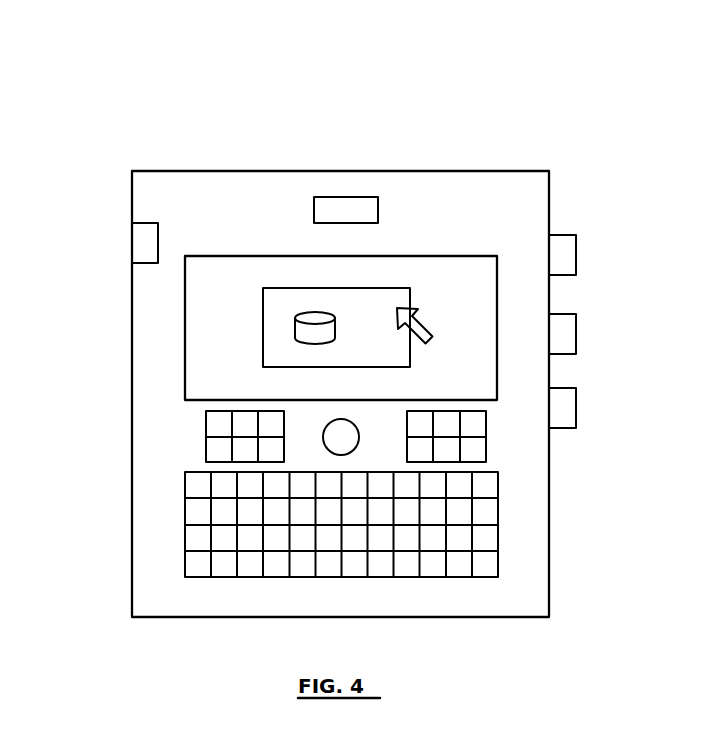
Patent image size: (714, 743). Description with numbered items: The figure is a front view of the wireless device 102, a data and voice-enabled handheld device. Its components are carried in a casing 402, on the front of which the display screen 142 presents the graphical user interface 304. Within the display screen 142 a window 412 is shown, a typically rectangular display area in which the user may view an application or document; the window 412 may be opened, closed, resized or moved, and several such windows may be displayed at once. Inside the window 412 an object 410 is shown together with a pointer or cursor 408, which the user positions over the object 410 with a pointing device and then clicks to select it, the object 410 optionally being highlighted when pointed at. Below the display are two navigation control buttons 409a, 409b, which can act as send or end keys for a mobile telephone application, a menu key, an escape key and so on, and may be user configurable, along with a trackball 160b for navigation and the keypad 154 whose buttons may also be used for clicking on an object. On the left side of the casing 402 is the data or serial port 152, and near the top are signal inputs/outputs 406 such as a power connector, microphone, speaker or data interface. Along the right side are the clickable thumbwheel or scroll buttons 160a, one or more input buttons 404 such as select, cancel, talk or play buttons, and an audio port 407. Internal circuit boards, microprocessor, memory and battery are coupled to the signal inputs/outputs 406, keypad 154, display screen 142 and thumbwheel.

The wireless device 102 is at (518, 82).
The casing 402 is at (239, 198).
The signal inputs/outputs 406 is at (352, 197).
The data or serial port 152 is at (145, 244).
The display screen 142 is at (185, 289).
The graphical user interface 304 is at (197, 315).
The window 412 is at (380, 302).
The object 410 is at (294, 329).
The pointer or cursor 408 is at (431, 339).
The clickable thumbwheel or scroll buttons 160a is at (577, 255).
The input buttons 404 is at (577, 335).
The audio port 407 is at (577, 410).
The navigation control button 409a is at (205, 420).
The navigation control button 409b is at (486, 427).
The trackball 160b is at (346, 454).
The keypad 154 is at (498, 508).